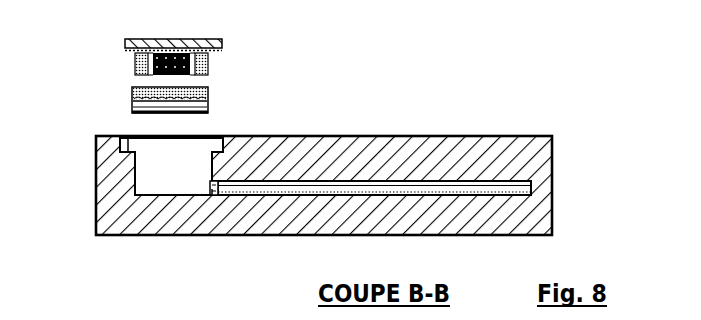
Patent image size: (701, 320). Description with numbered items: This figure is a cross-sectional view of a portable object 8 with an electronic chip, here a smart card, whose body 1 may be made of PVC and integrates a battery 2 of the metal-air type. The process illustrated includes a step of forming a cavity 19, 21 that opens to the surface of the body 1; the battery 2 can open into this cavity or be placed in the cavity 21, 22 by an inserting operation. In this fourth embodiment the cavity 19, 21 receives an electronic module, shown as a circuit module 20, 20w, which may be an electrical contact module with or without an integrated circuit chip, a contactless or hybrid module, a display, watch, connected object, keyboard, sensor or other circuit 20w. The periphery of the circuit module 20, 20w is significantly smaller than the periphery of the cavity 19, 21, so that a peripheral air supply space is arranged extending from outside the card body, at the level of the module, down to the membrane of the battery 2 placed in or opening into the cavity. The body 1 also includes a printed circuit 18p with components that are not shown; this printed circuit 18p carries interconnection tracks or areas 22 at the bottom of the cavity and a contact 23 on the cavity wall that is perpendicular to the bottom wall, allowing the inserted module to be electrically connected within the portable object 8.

The body 1 is at (562, 152).
The battery 2 is at (112, 88).
The portable object 8 is at (347, 152).
The printed circuit 18p is at (494, 203).
The cavity 19 is at (224, 160).
The circuit module 20 is at (251, 57).
The circuit 20w is at (173, 57).
The cavity 21 is at (132, 140).
The interconnection tracks or areas 22 is at (205, 207).
The contact 23 is at (201, 183).